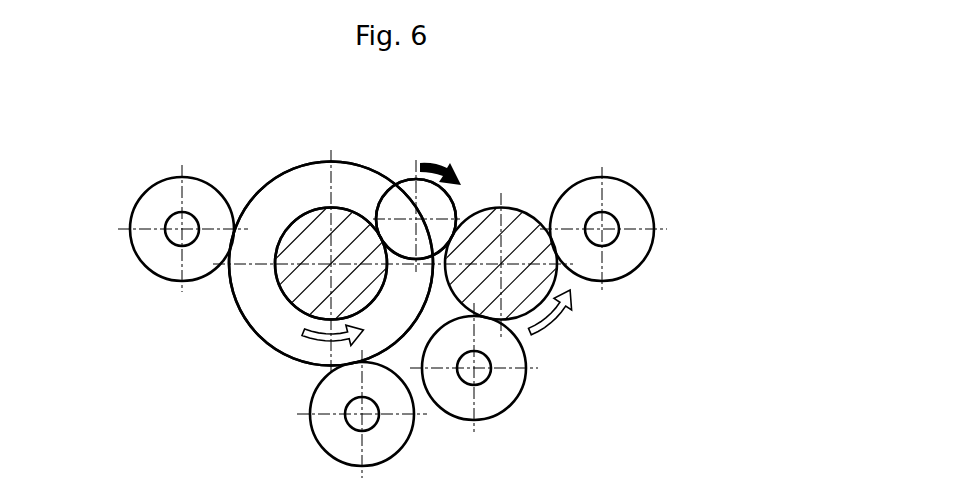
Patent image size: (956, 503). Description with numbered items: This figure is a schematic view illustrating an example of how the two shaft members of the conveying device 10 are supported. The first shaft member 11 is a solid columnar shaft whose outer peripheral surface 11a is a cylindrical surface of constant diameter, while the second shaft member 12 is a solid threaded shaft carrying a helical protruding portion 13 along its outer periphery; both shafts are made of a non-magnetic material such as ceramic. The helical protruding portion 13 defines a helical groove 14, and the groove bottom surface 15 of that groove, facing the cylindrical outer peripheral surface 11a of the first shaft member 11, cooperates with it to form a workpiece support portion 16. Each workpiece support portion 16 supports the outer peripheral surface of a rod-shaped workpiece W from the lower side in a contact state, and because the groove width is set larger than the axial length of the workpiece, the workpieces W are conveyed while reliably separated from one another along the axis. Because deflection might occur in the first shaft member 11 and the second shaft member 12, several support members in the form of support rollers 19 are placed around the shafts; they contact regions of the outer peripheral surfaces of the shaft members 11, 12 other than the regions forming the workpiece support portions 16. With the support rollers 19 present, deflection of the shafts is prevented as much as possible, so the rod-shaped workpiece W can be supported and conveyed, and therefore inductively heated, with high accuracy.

The conveying device 10 is at (585, 127).
The first shaft member 11 is at (501, 231).
The outer peripheral surface 11a is at (546, 229).
The second shaft member 12 is at (242, 325).
The helical protruding portion 13 is at (349, 172).
The helical groove 14 is at (306, 203).
The groove bottom surface 15 is at (290, 298).
The workpiece support portion 16 is at (465, 203).
The support roller 19 is at (154, 201).
The rod-shaped workpiece W is at (407, 194).